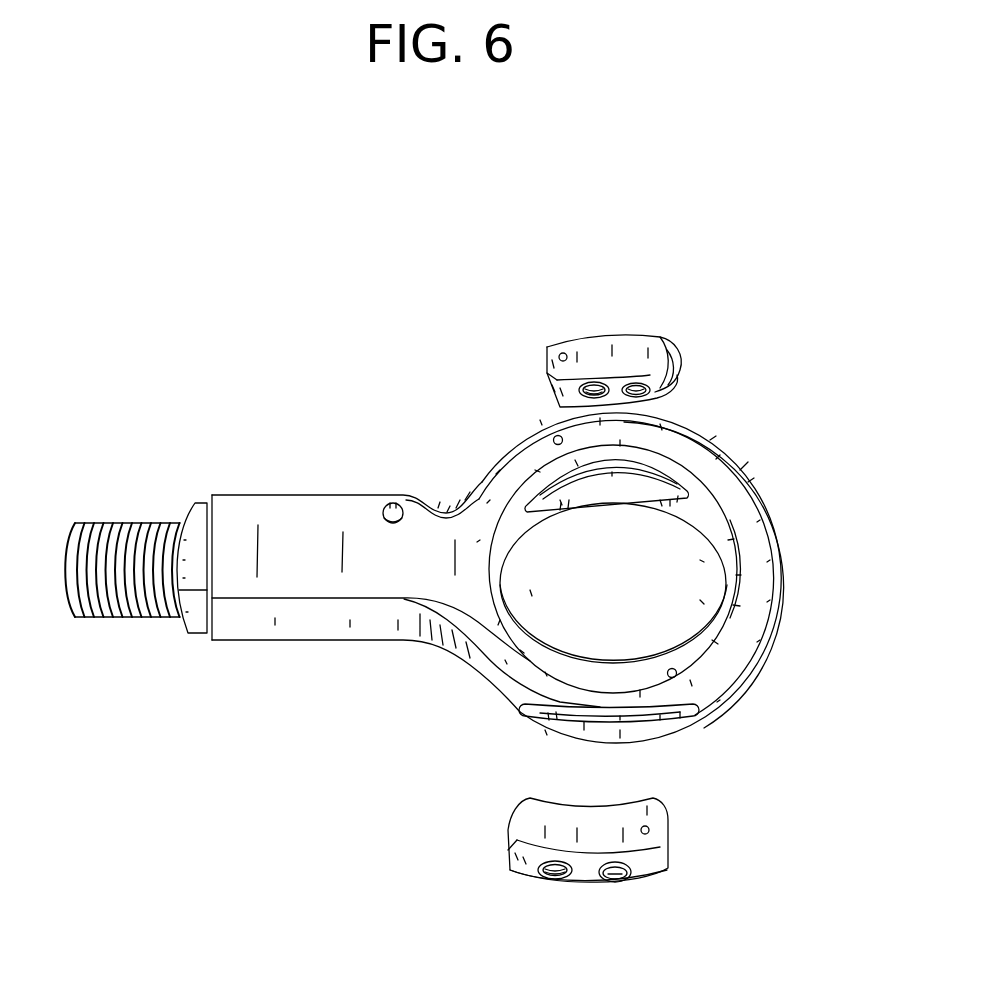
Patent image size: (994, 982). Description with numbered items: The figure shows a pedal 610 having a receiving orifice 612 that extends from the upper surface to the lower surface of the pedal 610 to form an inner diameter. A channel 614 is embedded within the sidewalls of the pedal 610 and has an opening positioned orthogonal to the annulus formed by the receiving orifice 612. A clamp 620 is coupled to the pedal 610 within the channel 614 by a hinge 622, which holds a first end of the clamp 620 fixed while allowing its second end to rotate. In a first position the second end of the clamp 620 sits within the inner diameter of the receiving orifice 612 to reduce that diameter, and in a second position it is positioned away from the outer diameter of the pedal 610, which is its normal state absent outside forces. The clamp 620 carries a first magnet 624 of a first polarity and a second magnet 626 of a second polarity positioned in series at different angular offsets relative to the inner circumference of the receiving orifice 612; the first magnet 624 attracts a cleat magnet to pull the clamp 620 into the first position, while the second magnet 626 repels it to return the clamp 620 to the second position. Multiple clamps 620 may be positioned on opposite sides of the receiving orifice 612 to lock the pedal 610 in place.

The pedal 610 is at (278, 370).
The receiving orifice 612 is at (715, 501).
The channel 614 is at (574, 724).
The clamp 620 is at (638, 347).
The hinge 622 is at (560, 353).
The first magnet 624 is at (593, 385).
The second magnet 626 is at (648, 385).